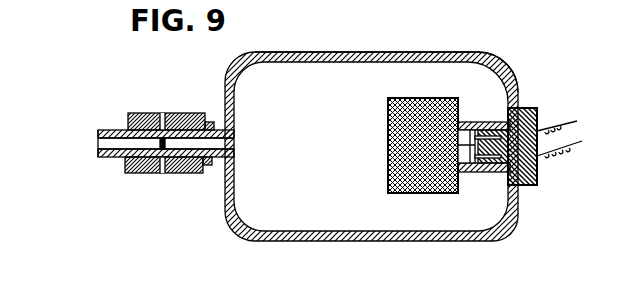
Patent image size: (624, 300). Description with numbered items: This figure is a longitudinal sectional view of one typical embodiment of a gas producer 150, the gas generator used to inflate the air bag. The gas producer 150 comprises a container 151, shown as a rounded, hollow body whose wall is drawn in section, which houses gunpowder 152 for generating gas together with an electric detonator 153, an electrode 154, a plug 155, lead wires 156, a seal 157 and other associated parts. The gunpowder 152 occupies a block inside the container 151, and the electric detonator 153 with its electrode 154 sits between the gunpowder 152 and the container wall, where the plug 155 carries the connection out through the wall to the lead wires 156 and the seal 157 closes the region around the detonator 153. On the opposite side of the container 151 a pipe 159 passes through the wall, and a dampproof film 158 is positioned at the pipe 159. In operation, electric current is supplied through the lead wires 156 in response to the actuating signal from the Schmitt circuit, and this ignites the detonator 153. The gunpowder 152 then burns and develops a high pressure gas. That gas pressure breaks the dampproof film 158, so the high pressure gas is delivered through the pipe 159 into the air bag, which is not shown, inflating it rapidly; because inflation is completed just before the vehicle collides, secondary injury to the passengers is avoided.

The gas producer 150 is at (410, 268).
The container 151 is at (358, 52).
The gunpowder 152 is at (388, 147).
The electric detonator 153 is at (435, 99).
The electrode 154 is at (487, 128).
The plug 155 is at (530, 96).
The lead wires 156 is at (575, 143).
The seal 157 is at (462, 172).
The dampproof film 158 is at (238, 133).
The pipe 159 is at (100, 129).